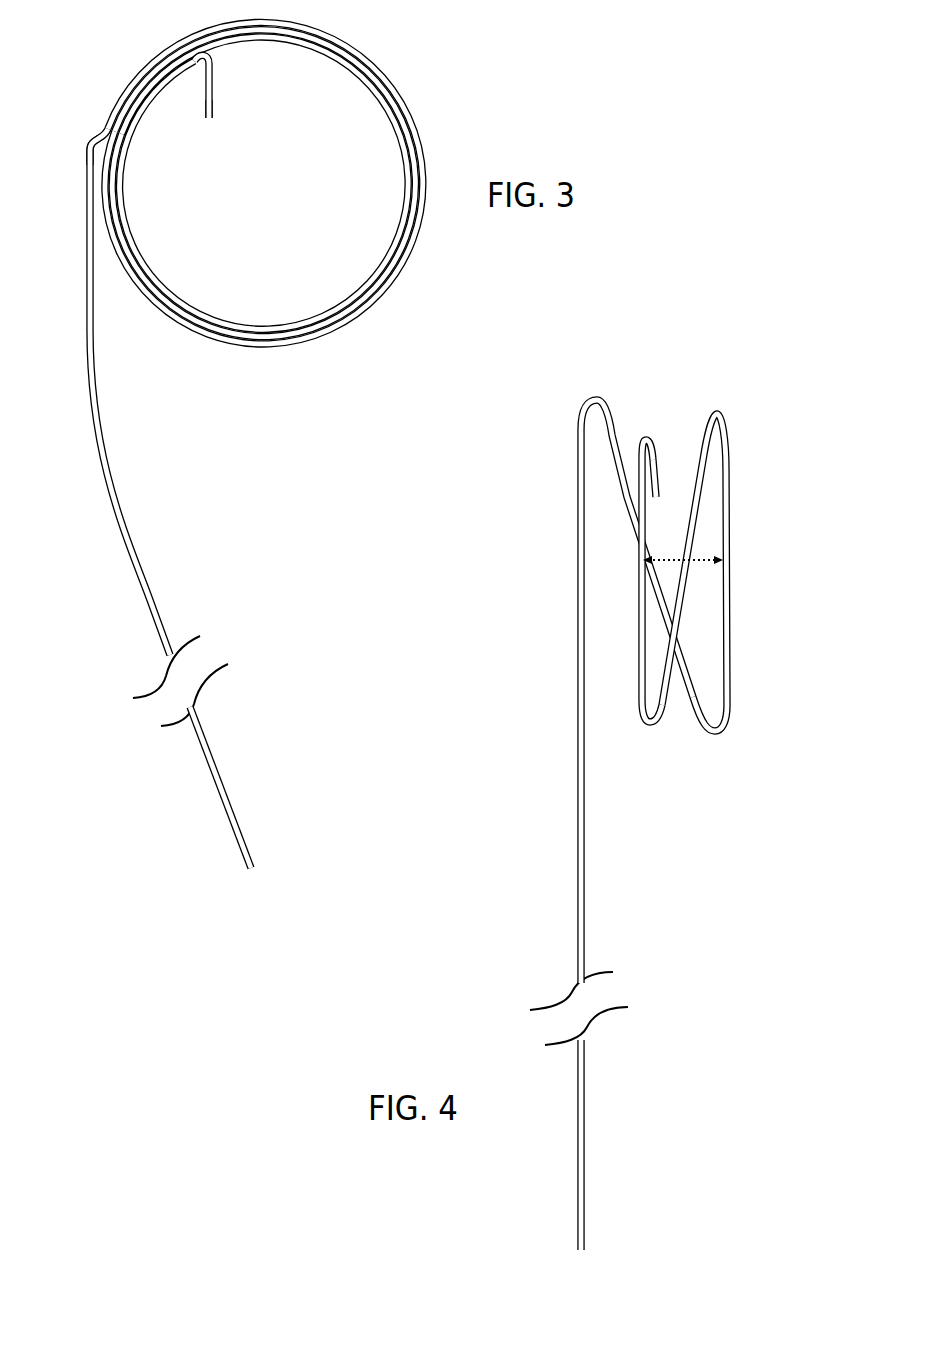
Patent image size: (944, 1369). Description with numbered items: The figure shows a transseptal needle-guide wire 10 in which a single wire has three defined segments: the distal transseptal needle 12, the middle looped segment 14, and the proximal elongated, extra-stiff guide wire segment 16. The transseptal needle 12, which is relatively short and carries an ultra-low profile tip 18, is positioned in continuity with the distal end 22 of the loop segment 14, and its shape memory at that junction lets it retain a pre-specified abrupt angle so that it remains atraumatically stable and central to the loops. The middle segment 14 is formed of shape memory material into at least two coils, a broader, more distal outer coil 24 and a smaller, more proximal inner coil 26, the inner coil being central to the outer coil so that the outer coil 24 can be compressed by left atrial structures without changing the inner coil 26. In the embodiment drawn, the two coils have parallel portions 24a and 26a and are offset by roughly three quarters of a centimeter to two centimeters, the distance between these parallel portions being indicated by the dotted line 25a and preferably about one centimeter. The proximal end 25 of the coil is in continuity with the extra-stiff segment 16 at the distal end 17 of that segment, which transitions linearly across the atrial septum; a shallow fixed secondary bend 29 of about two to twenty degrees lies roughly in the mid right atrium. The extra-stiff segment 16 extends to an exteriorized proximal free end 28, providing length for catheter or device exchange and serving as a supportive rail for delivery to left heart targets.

In FIG. 3, the transseptal guide wire 10 is at (247, 440).
In FIG. 4, the transseptal guide wire 10 is at (722, 851).
In FIG. 3, the transseptal needle 12 is at (212, 82).
In FIG. 4, the transseptal needle 12 is at (657, 468).
In FIG. 3, the middle loop segment 14 is at (407, 102).
In FIG. 4, the middle loop segment 14 is at (732, 448).
In FIG. 3, the proximal extra-stiff GW segment 16 is at (86, 327).
In FIG. 4, the proximal extra-stiff GW segment 16 is at (578, 667).
In FIG. 3, the distal end of proximal segment 17 is at (86, 213).
In FIG. 3, the ultra-low profile tip 18 is at (213, 113).
In FIG. 3, the distal end of loop segment 22 is at (180, 75).
In FIG. 4, the distal end of loop segment 22 is at (638, 437).
In FIG. 3, the outer coil 24 is at (418, 247).
In FIG. 4, the parallel portion of outer coil 24a is at (728, 592).
In FIG. 3, the proximal end of coil 25 is at (90, 145).
In FIG. 4, the dotted line 25a is at (683, 546).
In FIG. 3, the inner coil 26 is at (410, 190).
In FIG. 4, the parallel portion of inner coil 26a is at (635, 615).
In FIG. 3, the proximal free end 28 is at (233, 812).
In FIG. 4, the proximal free end 28 is at (584, 1190).
In FIG. 3, the secondary bend 29 is at (112, 492).